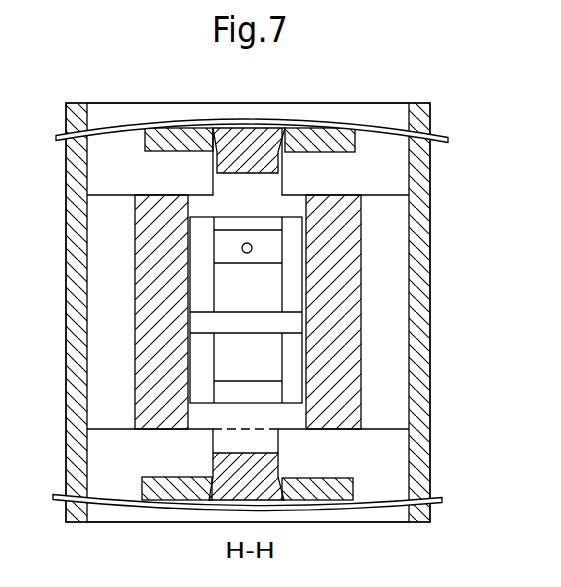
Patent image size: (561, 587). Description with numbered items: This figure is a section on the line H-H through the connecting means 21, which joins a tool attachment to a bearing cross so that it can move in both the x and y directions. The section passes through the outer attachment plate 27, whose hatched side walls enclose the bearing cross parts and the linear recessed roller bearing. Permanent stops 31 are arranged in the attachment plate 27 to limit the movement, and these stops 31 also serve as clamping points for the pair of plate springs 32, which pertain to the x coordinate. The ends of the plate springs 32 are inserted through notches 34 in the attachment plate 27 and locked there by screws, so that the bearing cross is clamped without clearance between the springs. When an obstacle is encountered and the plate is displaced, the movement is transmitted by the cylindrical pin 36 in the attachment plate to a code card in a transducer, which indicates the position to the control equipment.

The connecting means 21 is at (536, 327).
The outer attachment plate 27 is at (243, 150).
The permanent stops 31 is at (172, 138).
The plate springs 32 is at (357, 127).
The notches 34 is at (64, 133).
The cylindrical pins 36 is at (253, 247).